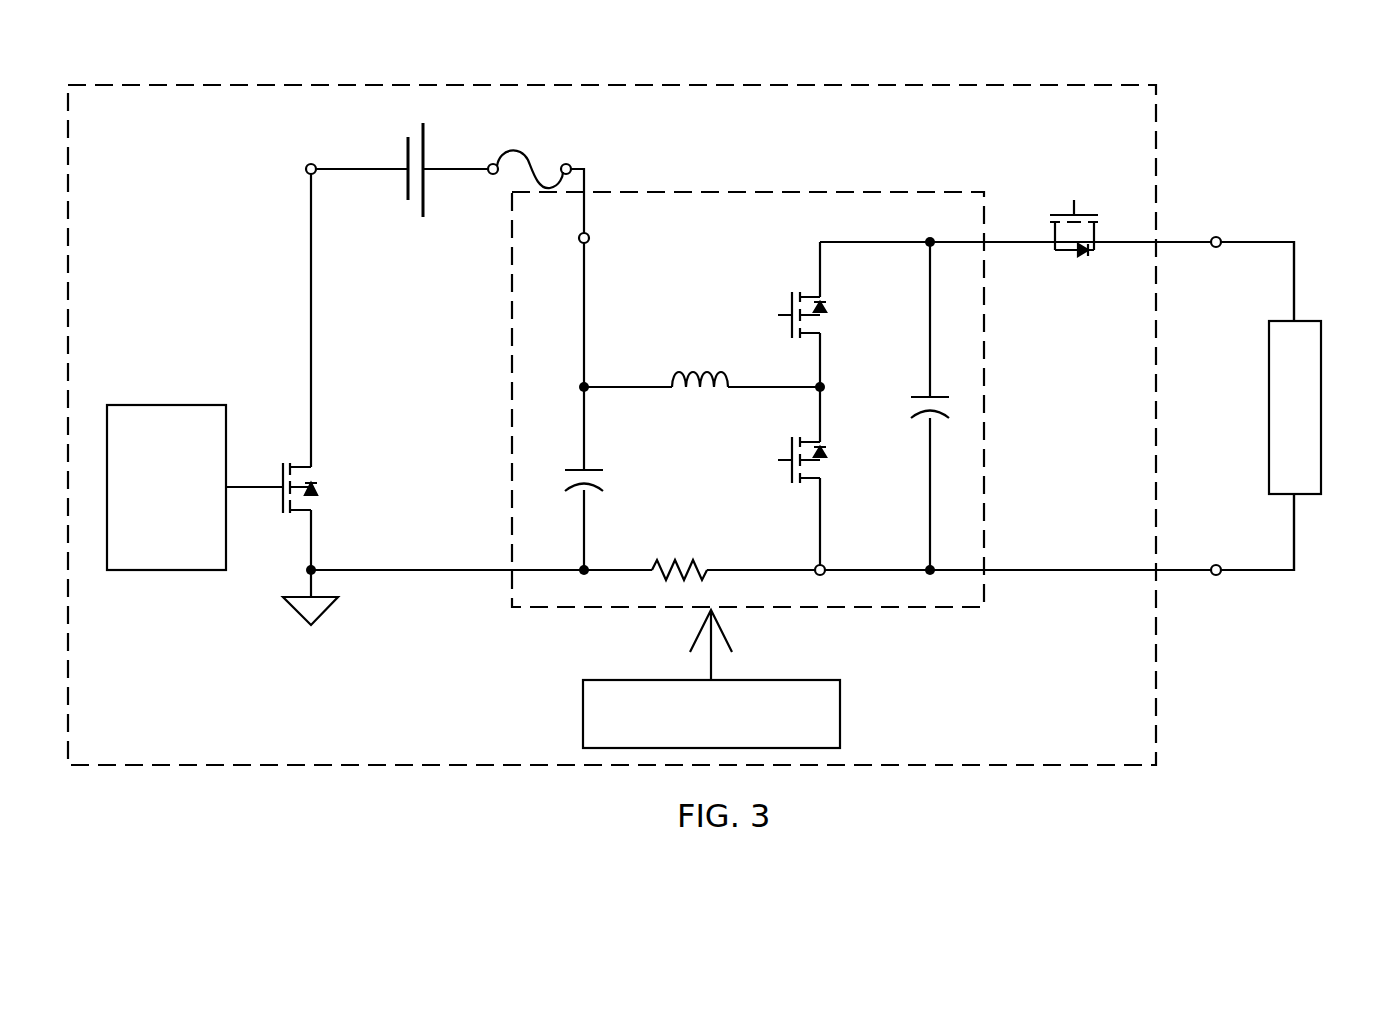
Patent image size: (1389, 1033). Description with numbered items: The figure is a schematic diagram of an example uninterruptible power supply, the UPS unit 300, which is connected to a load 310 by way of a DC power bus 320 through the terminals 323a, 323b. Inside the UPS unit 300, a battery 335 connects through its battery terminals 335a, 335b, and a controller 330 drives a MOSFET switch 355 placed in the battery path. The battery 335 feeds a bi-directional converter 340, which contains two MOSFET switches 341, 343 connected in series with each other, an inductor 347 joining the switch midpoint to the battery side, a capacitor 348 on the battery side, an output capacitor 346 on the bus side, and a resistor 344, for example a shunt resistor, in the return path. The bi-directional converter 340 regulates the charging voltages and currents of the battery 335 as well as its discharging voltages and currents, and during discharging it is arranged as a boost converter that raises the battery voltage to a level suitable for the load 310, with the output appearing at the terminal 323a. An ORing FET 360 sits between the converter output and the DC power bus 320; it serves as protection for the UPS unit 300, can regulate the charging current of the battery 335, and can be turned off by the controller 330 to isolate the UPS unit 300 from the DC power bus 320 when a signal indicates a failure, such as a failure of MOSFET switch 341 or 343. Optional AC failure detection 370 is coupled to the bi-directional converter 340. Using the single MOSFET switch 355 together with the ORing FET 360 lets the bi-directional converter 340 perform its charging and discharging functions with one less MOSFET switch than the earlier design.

The UPS unit 300 is at (162, 85).
The load 310 is at (1268, 337).
The DC power bus 320 is at (1312, 228).
The terminal 323a is at (1230, 210).
The terminal 323b is at (1218, 592).
The controller 330 is at (168, 405).
The battery 335 is at (385, 155).
The battery terminal 335a is at (300, 160).
The battery terminal 335b is at (490, 183).
The bi-directional converter 340 is at (760, 192).
The MOSFET switch 341 is at (845, 307).
The MOSFET switch 343 is at (770, 448).
The resistor 344 is at (694, 548).
The output capacitor 346 is at (950, 378).
The inductor 347 is at (690, 357).
The capacitor 348 is at (617, 488).
The MOSFET switch 355 is at (335, 460).
The ORing FET 360 is at (1065, 195).
The AC failure detection 370 is at (840, 718).